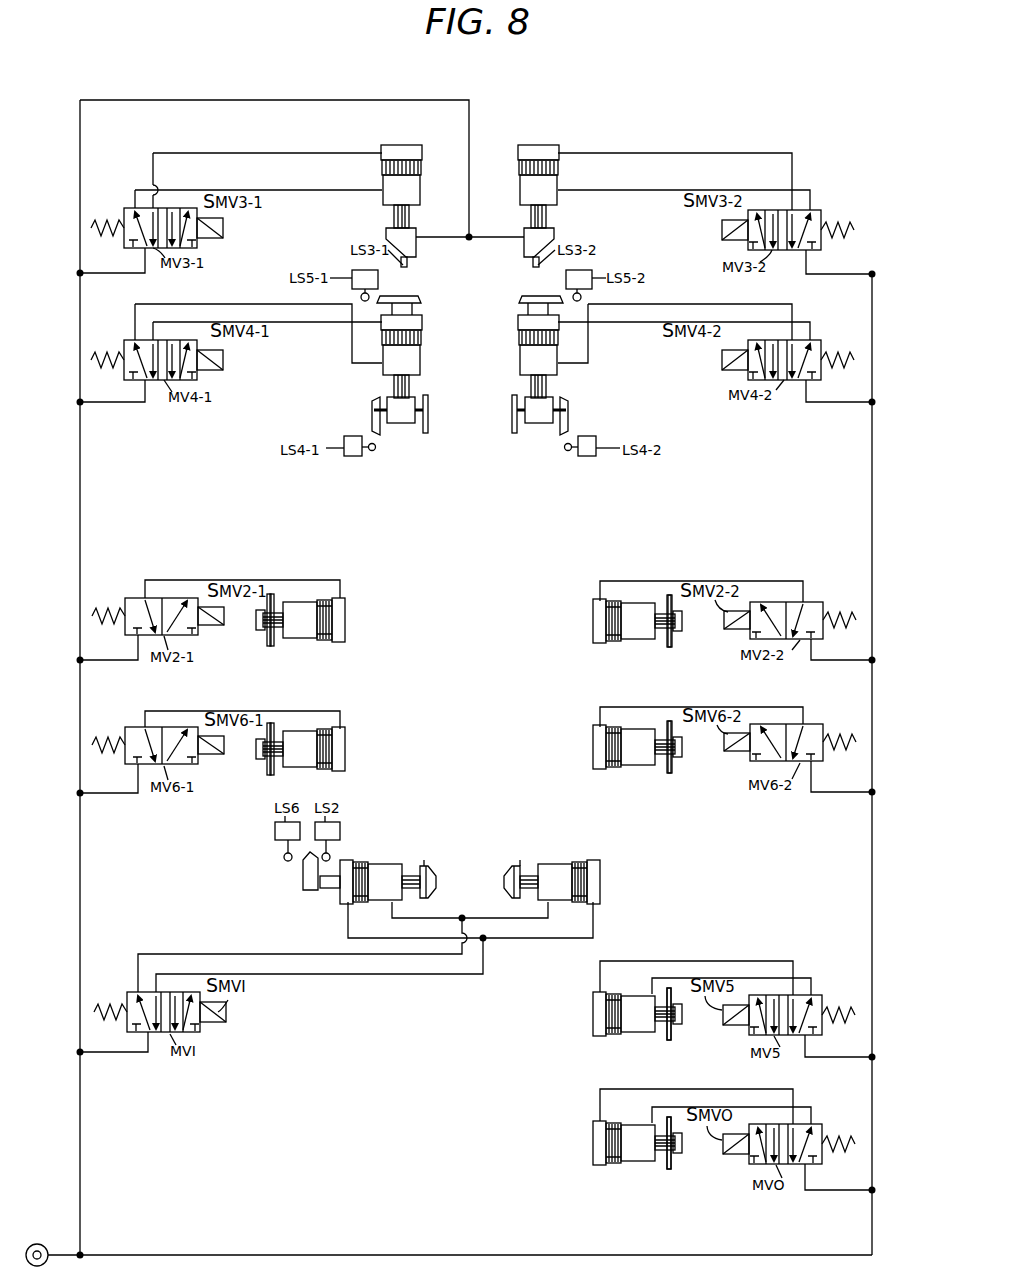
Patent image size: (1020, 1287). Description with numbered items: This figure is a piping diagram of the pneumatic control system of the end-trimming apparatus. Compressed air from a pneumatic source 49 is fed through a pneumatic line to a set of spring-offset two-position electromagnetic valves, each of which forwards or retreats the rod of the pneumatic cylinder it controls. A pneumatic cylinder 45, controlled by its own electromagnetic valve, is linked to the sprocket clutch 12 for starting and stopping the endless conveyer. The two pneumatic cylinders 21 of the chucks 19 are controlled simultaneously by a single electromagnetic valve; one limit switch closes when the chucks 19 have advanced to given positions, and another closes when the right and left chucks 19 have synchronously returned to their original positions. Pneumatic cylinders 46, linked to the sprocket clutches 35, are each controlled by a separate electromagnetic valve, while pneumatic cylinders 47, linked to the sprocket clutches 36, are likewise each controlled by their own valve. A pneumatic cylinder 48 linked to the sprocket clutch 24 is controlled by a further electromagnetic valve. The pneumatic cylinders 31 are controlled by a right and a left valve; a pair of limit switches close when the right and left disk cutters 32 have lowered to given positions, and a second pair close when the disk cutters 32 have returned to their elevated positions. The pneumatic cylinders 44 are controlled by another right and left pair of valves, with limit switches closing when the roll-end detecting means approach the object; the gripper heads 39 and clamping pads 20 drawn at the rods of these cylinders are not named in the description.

The pneumatic cylinders 44 is at (421, 157).
The gripper head 39 is at (418, 263).
The pneumatic cylinders 31 is at (421, 356).
The disk cutters 32 is at (428, 405).
The pneumatic cylinders 47 is at (346, 614).
The sprocket clutches 36 is at (270, 638).
The pneumatic cylinders 46 is at (346, 741).
The sprocket clutches 35 is at (270, 770).
The pneumatic cylinders 21 is at (380, 862).
The chucks 19 is at (426, 866).
The clamping pad 20 is at (437, 878).
The pneumatic cylinder 48 is at (593, 1012).
The sprocket clutch 24 is at (672, 1040).
The pneumatic cylinder 45 is at (593, 1141).
The sprocket clutch 12 is at (672, 1170).
The pneumatic source 49 is at (40, 1243).